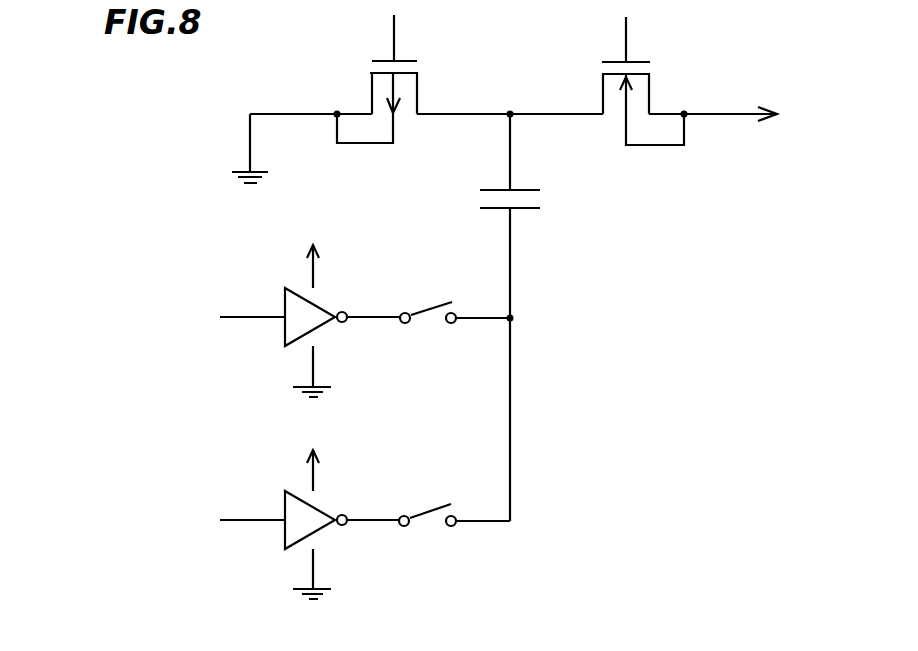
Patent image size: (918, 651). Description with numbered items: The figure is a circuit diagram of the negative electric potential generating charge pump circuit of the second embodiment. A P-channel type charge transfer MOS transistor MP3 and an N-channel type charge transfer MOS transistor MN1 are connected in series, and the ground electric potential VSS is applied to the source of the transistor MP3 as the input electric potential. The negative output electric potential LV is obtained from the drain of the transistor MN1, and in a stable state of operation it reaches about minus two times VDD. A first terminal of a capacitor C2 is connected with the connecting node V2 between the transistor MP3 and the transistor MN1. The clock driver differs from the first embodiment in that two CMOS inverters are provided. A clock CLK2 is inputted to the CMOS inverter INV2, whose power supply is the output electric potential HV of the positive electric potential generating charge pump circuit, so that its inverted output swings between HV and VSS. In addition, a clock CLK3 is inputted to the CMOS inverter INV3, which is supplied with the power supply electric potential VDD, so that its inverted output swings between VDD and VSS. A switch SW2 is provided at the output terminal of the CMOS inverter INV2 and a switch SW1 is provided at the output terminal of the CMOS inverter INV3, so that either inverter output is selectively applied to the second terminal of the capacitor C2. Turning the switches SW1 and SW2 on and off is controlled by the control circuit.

The P-channel type charge transfer MOS transistor MP3 is at (410, 125).
The N-channel type charge transfer MOS transistor MN1 is at (667, 97).
The capacitor C2 is at (547, 201).
The switch SW1 is at (454, 501).
The switch SW2 is at (455, 297).
The CMOS inverter INV2 is at (285, 352).
The CMOS inverter INV3 is at (285, 555).
The connecting node V2 is at (510, 114).
The ground electric potential VSS is at (224, 148).
The negative output electric potential LV is at (730, 116).
The output electric potential of the positive electric potential generating charge p HV is at (343, 263).
The power supply electric potential VDD is at (352, 466).
The clock CLK2 is at (218, 319).
The clock CLK3 is at (218, 522).